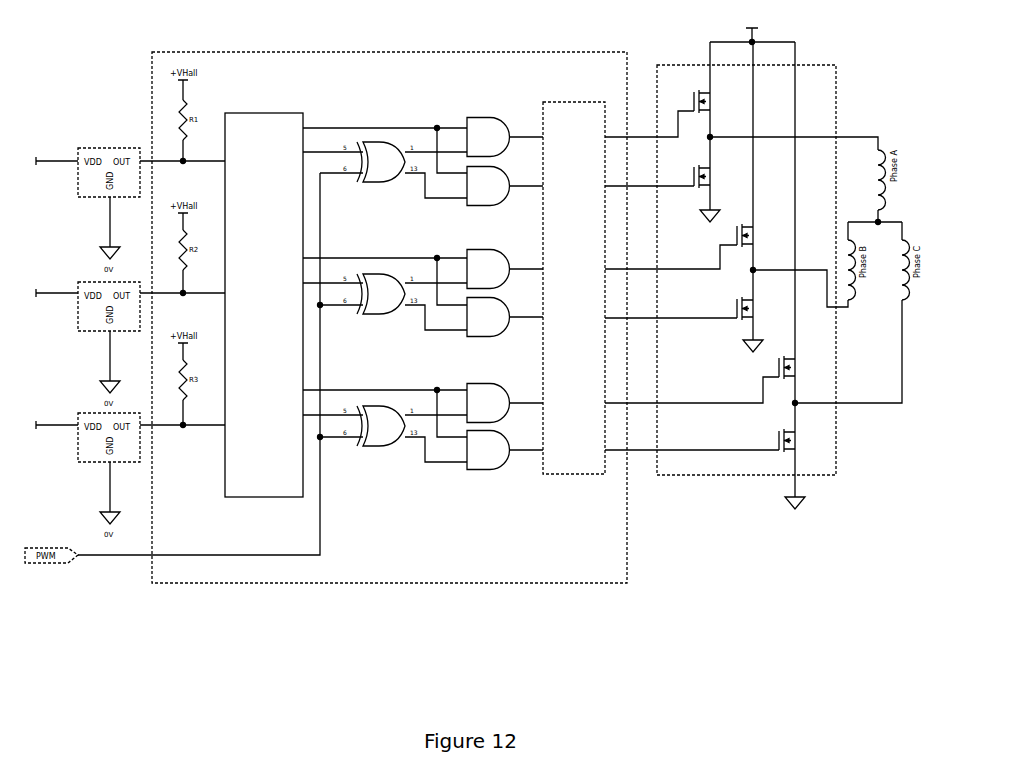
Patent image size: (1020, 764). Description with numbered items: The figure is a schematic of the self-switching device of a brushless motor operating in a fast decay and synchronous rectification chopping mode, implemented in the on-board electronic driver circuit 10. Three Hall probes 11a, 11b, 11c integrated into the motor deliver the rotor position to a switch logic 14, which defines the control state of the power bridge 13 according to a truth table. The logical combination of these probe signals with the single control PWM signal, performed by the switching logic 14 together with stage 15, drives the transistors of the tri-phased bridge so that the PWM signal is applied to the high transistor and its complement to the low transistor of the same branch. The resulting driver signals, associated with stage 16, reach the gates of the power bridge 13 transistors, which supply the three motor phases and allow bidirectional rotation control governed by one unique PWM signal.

The on-board electronic driver circuit 10 is at (166, 100).
The Hall probe 11a is at (88, 183).
The Hall probe 11b is at (88, 313).
The Hall probe 11c is at (88, 445).
The power bridge 13 is at (730, 473).
The switch logic 14 is at (268, 126).
The switching logic combination stage 15 is at (498, 457).
The driver signals chronogram stage 16 is at (577, 123).